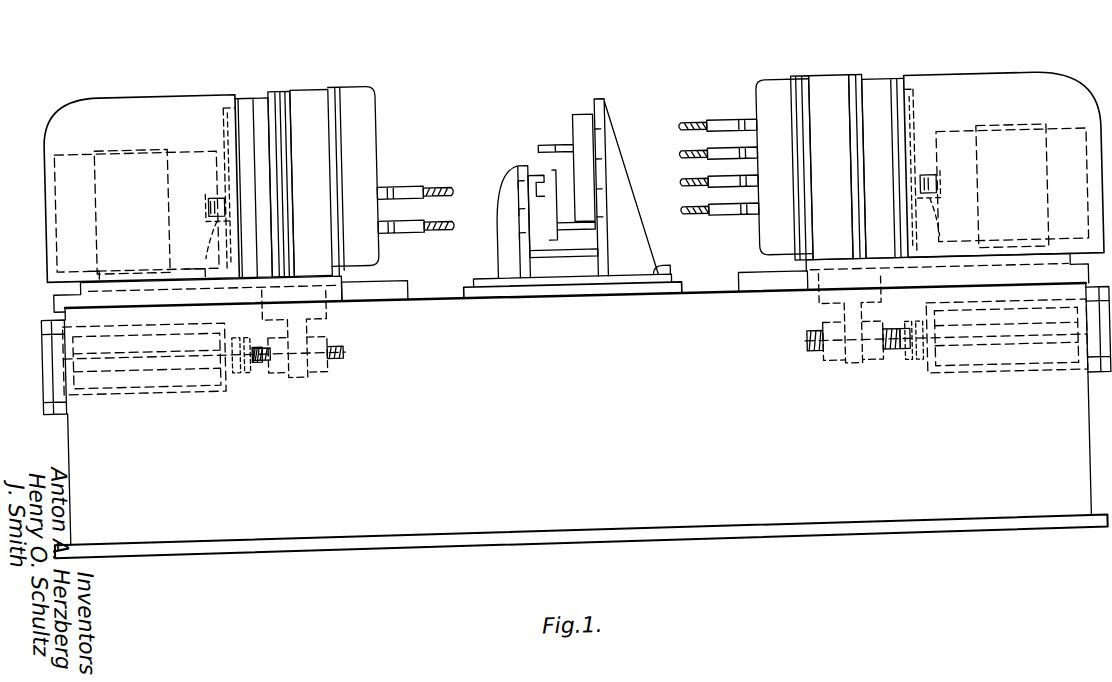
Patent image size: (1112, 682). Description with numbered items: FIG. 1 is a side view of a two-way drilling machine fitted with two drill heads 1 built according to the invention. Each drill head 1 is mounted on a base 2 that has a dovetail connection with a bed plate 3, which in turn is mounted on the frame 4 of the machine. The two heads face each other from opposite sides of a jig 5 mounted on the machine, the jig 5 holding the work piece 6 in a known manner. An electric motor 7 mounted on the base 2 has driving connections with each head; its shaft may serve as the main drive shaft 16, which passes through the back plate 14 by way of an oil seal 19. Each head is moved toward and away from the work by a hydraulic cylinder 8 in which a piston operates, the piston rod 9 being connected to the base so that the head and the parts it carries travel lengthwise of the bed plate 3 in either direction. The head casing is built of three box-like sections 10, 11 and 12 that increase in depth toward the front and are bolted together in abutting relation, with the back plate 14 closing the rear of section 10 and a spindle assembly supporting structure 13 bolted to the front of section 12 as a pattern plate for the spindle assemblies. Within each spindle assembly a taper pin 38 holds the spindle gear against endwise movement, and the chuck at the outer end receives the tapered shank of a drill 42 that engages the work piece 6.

The drill head 1 is at (310, 82).
The base 2 is at (68, 285).
The bed plate 3 is at (388, 292).
The frame 4 is at (414, 528).
The jig 5 is at (609, 268).
The work piece 6 is at (561, 144).
The electric motor 7 is at (117, 147).
The hydraulic cylinder 8 is at (183, 383).
The piston rod 9 is at (340, 356).
The box-like section 10 is at (242, 110).
The box-like section 11 is at (250, 92).
The box-like section 12 is at (304, 108).
The spindle assembly supporting structure 13 is at (362, 96).
The back plate 14 is at (232, 104).
The main drive shaft 16 is at (572, 216).
The oil seal 19 is at (222, 190).
The taper pin 38 is at (412, 186).
The drill 42 is at (447, 186).